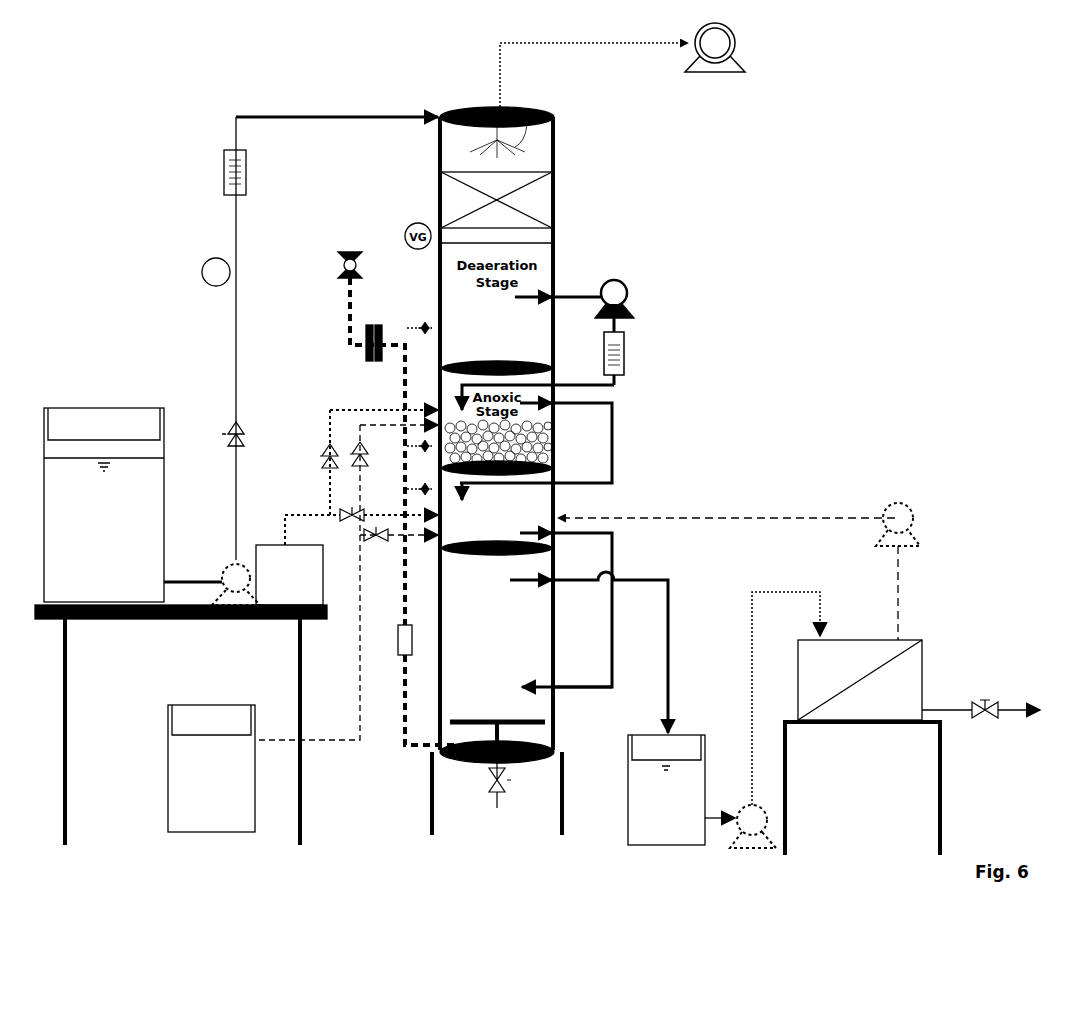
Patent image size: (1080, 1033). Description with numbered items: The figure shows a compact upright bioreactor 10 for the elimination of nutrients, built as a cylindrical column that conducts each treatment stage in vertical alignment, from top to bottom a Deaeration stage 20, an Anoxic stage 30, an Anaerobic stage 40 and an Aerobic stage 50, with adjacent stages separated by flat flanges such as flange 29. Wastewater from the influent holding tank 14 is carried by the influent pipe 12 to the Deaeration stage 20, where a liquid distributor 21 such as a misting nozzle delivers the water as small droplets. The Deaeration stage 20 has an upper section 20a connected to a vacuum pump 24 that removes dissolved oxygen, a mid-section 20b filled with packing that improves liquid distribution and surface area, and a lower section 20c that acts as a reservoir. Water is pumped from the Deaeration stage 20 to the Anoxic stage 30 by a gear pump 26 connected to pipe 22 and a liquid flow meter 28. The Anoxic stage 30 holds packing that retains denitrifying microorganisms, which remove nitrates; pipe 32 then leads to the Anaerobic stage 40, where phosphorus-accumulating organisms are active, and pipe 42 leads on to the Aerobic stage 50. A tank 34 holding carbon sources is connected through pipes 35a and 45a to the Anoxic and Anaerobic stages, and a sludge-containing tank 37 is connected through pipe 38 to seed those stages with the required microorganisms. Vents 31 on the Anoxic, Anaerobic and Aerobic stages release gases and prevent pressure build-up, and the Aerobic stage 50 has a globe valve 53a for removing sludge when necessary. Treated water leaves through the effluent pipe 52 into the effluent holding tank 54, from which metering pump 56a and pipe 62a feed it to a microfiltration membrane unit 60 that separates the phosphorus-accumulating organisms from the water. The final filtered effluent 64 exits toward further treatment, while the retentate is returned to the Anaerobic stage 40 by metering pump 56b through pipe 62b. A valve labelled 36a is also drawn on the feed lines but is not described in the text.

The bioreactor 10 is at (788, 314).
The influent pipe 12 is at (278, 113).
The influent holding tank 14 is at (181, 626).
The Deaeration stage 20 is at (556, 247).
The upper section 20a is at (555, 140).
The mid-section 20b is at (556, 200).
The lower section 20c is at (556, 335).
The liquid distributor 21 is at (558, 121).
The pipe 22 is at (626, 330).
The vacuum pump 24 is at (745, 72).
The gear pump 26 is at (620, 283).
The liquid flow meter 28 is at (622, 375).
The flat flange 29 is at (486, 362).
The Anoxic stage 30 is at (560, 428).
The vents 31 is at (438, 388).
The pipe 32 is at (613, 440).
The carbon source tank 34 is at (324, 583).
The pipe 35a is at (333, 410).
The valve 36a is at (322, 456).
The sludge-containing tank 37 is at (235, 784).
The pipe 38 is at (360, 680).
The Anaerobic stage 40 is at (556, 498).
The pipe 42 is at (614, 545).
The pipe 45a is at (288, 513).
The Aerobic stage 50 is at (558, 634).
The effluent pipe 52 is at (670, 660).
The globe valve 53a is at (488, 782).
The effluent holding tank 54 is at (628, 770).
The metering pump 56a is at (744, 808).
The metering pump 56b is at (915, 510).
The microfiltration membrane unit 60 is at (925, 653).
The pipe 62a is at (822, 598).
The pipe 62b is at (898, 606).
The final filtered effluent 64 is at (1028, 700).